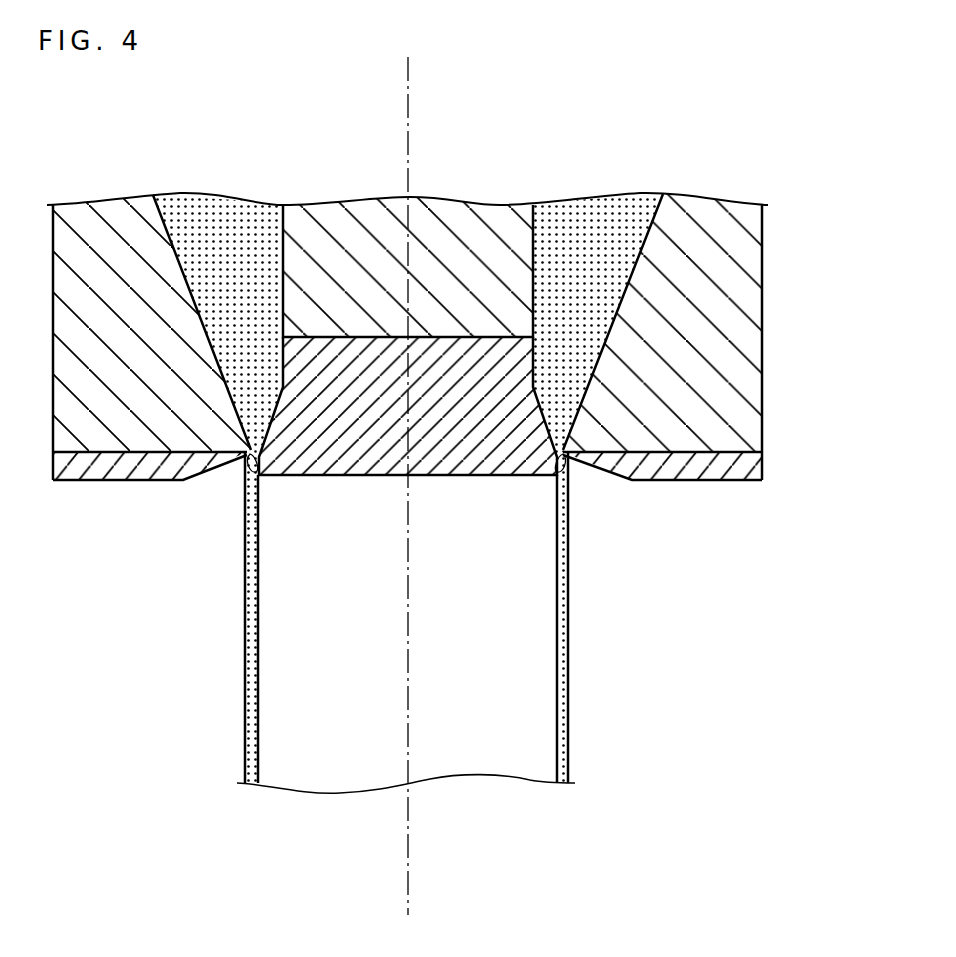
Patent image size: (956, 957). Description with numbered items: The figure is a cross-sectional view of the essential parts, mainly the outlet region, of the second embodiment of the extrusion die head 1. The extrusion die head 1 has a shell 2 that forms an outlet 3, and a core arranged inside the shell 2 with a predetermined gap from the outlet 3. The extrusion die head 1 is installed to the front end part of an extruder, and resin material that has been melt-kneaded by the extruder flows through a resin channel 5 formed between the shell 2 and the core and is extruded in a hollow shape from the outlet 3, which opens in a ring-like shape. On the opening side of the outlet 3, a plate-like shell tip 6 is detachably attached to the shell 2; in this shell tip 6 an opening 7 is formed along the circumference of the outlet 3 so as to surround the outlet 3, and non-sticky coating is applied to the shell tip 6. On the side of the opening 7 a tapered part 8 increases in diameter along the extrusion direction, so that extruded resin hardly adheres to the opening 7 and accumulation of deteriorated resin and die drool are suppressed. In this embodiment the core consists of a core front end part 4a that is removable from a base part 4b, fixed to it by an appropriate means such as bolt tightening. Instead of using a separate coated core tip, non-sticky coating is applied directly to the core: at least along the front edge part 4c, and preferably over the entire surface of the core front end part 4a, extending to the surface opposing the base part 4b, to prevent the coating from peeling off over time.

The extrusion die head 1 is at (797, 209).
The shell 2 is at (727, 388).
The outlet 3 is at (565, 477).
The core front end part 4a is at (470, 457).
The base part 4b is at (482, 225).
The front edge part 4c is at (260, 473).
The resin channel 5 is at (593, 223).
The shell tip 6 is at (686, 458).
The opening 7 is at (252, 453).
The tapered part 8 is at (203, 489).